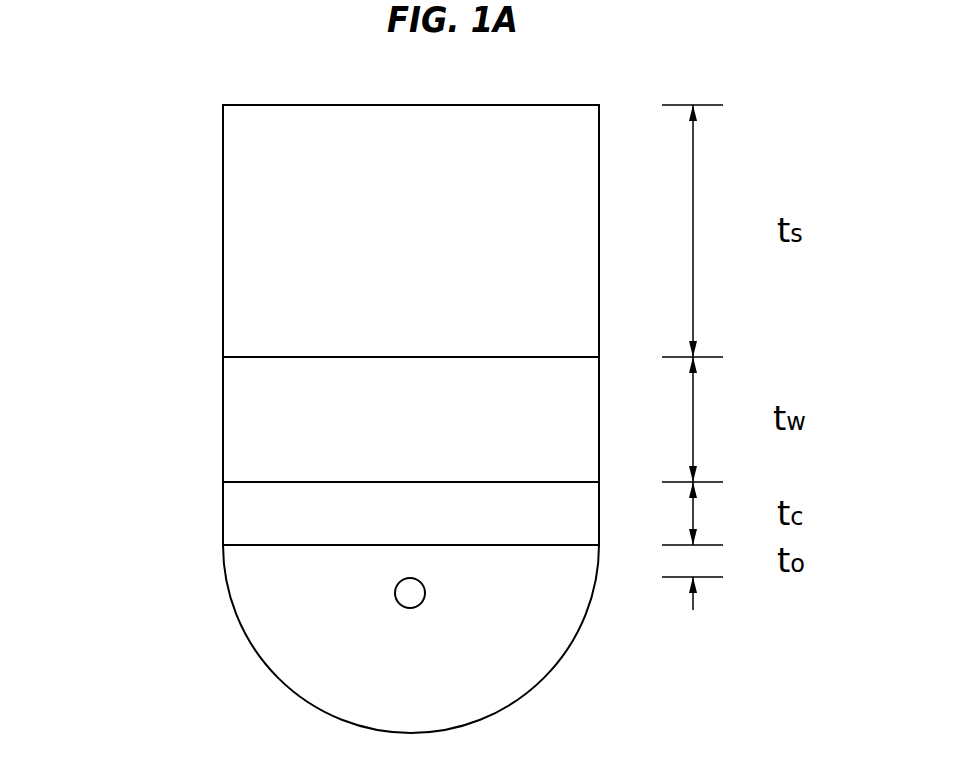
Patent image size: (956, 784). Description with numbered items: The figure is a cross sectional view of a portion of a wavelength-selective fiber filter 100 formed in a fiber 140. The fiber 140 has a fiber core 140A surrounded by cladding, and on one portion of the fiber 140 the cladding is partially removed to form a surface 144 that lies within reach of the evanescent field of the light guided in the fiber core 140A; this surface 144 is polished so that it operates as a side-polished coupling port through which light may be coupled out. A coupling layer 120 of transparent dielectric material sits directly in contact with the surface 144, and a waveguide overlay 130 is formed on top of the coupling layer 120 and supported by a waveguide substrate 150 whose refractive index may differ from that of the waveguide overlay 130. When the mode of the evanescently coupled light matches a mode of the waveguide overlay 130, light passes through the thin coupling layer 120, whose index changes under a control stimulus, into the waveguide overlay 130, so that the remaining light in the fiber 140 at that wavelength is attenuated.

The fiber filter 100 is at (193, 138).
The waveguide substrate 150 is at (432, 311).
The waveguide overlay 130 is at (247, 419).
The coupling layer 120 is at (232, 503).
The fiber 140 is at (406, 646).
The surface 144 is at (283, 550).
The fiber core 140A is at (395, 590).